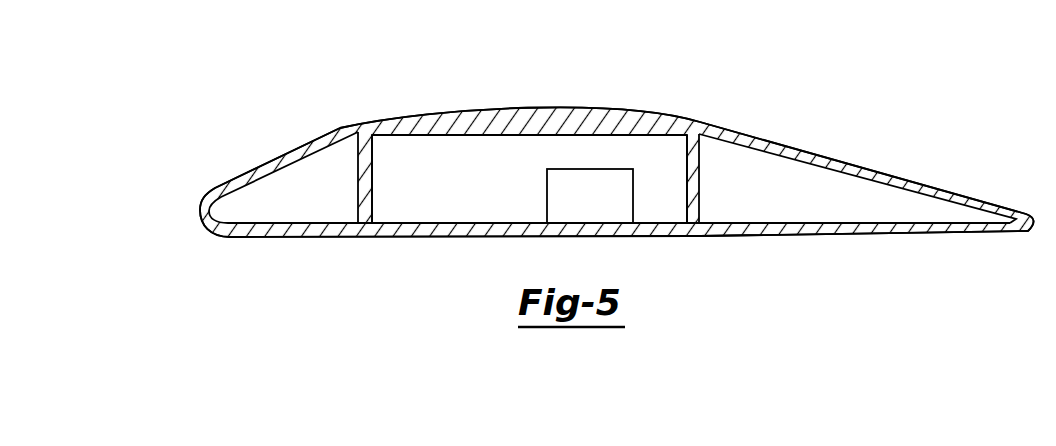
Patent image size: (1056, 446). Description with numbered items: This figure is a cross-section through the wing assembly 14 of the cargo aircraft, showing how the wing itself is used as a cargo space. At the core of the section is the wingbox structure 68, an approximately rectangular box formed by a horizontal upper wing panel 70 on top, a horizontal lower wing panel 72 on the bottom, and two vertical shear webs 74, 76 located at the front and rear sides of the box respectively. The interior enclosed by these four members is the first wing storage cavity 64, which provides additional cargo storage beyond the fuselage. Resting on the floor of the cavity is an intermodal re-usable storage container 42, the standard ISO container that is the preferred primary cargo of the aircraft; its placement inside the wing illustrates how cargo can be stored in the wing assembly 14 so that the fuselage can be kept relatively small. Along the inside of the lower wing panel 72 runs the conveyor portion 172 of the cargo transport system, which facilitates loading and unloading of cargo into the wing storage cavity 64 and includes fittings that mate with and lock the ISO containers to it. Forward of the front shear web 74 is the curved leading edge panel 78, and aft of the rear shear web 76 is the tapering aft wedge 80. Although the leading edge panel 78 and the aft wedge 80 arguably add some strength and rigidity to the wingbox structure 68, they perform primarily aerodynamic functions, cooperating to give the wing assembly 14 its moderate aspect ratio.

The wing assembly 14 is at (892, 160).
The intermodal re-usable storage container 42 is at (598, 203).
The first wing storage cavity 64 is at (648, 193).
The wingbox structure 68 is at (510, 127).
The horizontal upper wing panel 70 is at (448, 120).
The horizontal lower wing panel 72 is at (415, 230).
The vertical shear web 74 is at (360, 194).
The vertical shear web 76 is at (692, 210).
The curved leading edge panel 78 is at (253, 163).
The aft wedge 80 is at (943, 190).
The conveyor portion 172 is at (503, 222).